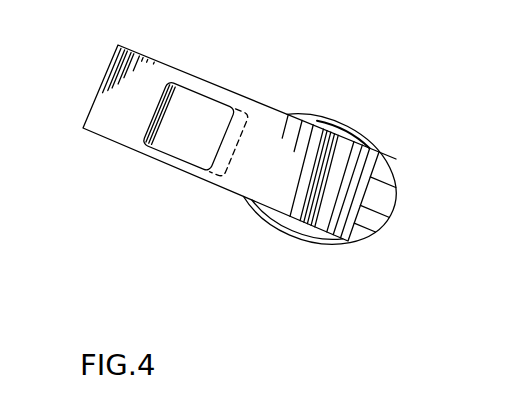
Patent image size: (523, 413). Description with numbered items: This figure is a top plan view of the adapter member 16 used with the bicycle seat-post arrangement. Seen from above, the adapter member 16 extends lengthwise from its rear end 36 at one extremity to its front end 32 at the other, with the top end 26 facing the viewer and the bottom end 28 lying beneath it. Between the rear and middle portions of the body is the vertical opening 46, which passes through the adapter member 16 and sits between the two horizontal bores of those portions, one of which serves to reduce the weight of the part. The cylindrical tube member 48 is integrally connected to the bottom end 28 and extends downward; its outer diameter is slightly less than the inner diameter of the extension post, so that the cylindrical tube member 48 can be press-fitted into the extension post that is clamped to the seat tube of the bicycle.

The adapter member 16 is at (303, 68).
The top end 26 is at (232, 187).
The bottom end 28 is at (352, 134).
The front end 32 is at (392, 182).
The rear end 36 is at (104, 79).
The vertical opening 46 is at (177, 102).
The cylindrical tube member 48 is at (373, 220).